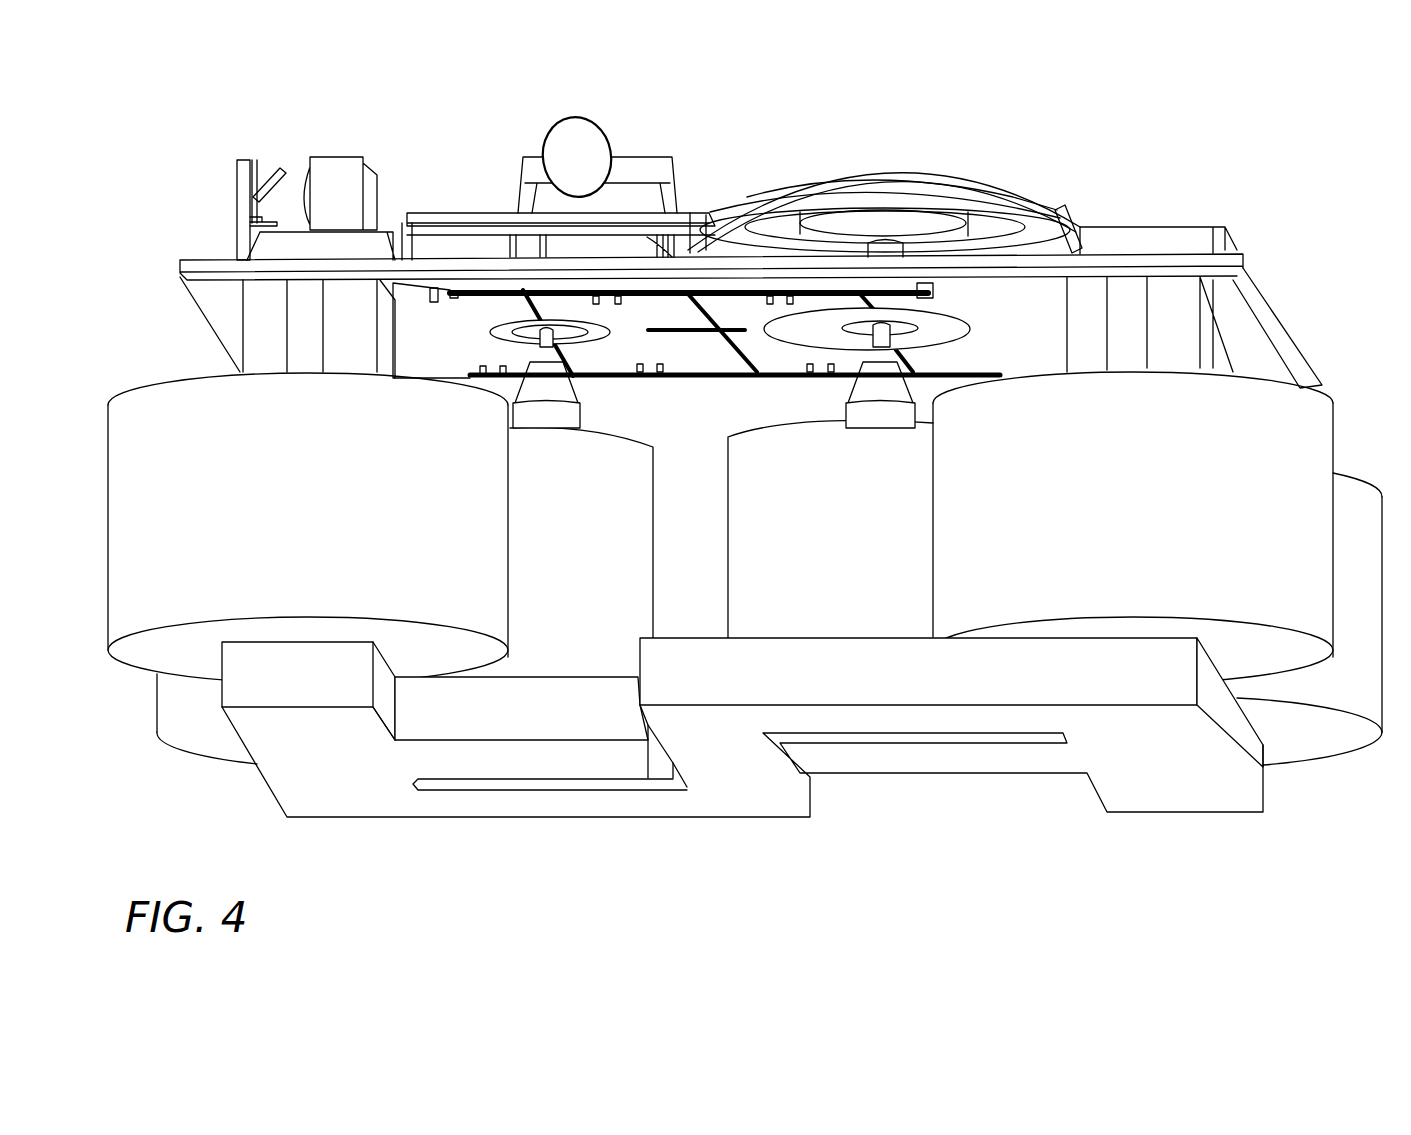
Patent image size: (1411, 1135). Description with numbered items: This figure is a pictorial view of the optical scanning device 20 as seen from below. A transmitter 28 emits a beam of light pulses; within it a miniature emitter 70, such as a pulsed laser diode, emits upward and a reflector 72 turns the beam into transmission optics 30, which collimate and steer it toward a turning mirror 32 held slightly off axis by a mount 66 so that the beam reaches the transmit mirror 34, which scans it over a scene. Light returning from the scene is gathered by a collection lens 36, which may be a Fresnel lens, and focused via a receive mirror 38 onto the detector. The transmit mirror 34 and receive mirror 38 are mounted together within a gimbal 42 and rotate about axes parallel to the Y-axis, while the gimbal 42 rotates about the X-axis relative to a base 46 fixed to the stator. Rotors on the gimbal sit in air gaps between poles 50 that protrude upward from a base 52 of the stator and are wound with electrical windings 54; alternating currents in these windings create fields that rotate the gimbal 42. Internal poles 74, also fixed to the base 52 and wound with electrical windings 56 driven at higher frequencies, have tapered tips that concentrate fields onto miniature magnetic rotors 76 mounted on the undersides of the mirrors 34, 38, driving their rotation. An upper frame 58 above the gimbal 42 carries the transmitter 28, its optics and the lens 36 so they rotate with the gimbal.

The optical scanning device 20 is at (1340, 110).
The transmitter 28 is at (233, 183).
The transmission optics 30 is at (343, 157).
The turning mirror 32 is at (545, 127).
The transmit mirror 34 is at (497, 332).
The collection lens 36 is at (1000, 181).
The receive mirror 38 is at (905, 333).
The gimbal 42 is at (1063, 297).
The base 46 is at (1257, 302).
The poles 50 is at (253, 300).
The base of stator 52 is at (737, 807).
The electrical windings 54 is at (117, 539).
The electrical windings 56 is at (627, 567).
The upper frame 58 is at (683, 212).
The mount 66 is at (640, 170).
The miniature emitter 70 is at (250, 222).
The reflector 72 is at (270, 160).
The internal poles 74 is at (580, 418).
The miniature magnetic rotors 76 is at (550, 347).